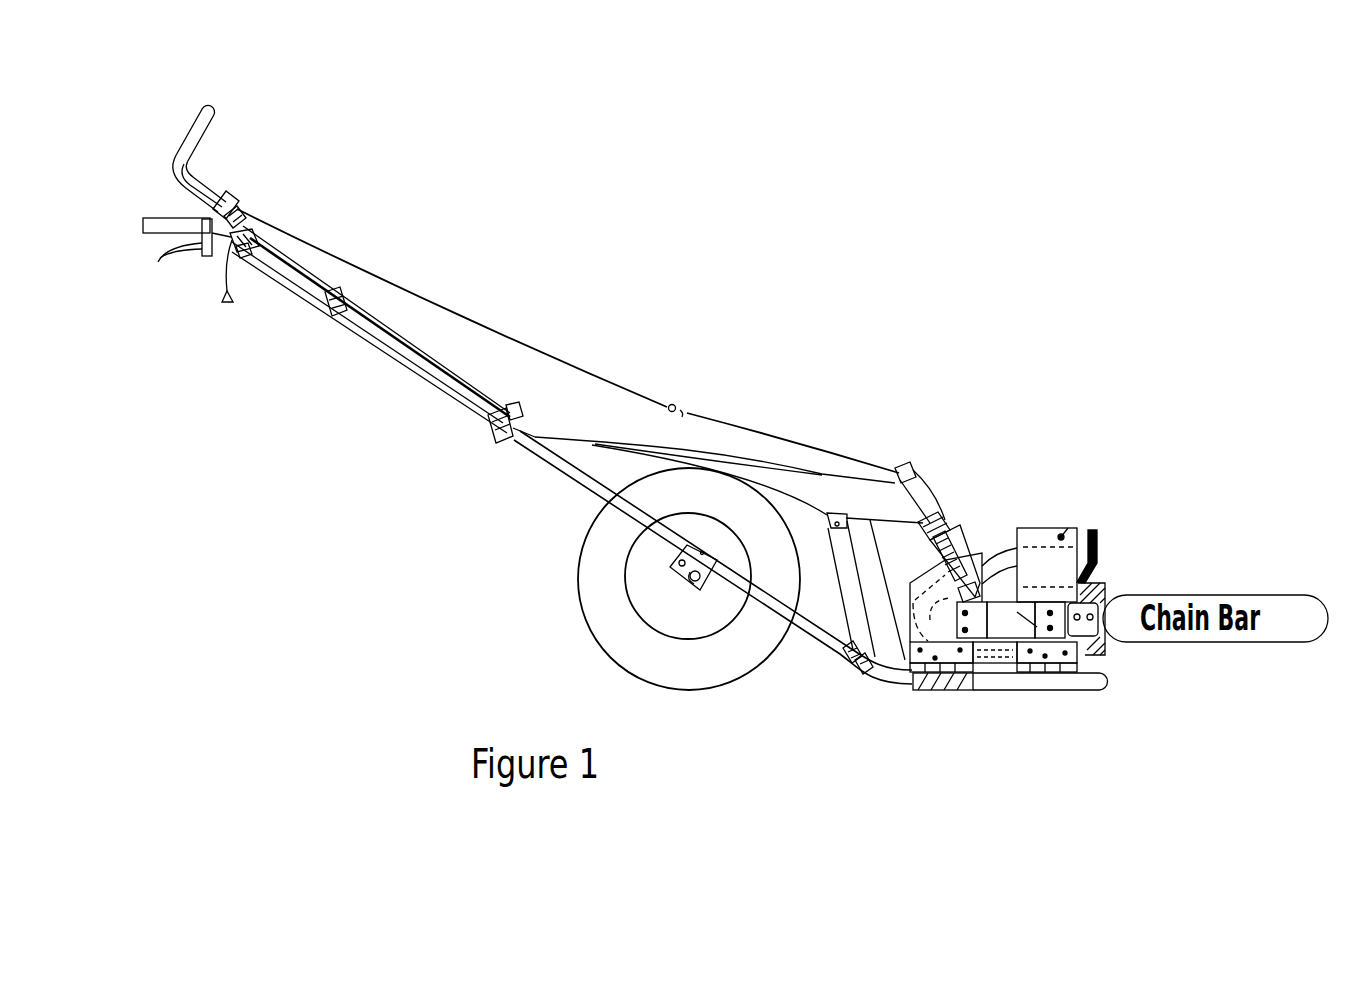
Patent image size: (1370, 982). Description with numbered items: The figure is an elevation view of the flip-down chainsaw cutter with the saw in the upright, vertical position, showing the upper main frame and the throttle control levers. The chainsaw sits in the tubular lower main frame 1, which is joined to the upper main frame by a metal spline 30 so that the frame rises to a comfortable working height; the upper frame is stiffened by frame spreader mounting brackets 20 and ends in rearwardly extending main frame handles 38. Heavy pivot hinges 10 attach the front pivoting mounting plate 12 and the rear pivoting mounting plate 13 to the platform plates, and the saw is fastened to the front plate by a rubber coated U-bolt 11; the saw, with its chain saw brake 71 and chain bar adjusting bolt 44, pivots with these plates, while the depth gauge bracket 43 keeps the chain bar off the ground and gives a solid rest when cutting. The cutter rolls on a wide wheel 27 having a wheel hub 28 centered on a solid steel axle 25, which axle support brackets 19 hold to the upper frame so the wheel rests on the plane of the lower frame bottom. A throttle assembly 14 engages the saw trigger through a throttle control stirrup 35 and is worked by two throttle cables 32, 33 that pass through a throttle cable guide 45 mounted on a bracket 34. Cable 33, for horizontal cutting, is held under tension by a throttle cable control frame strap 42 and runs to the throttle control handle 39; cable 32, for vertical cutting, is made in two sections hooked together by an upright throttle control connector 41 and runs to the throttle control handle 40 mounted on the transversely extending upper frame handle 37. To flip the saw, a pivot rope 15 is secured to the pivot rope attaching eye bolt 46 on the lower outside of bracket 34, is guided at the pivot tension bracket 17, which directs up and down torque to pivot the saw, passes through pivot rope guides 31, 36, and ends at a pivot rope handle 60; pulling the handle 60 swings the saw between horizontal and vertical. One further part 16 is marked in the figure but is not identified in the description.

The lower main frame 1 is at (1030, 683).
The pivot hinge 10 is at (913, 683).
The U-bolt 11 is at (1077, 530).
The front pivoting mounting plate 12 is at (1053, 530).
The rear pivoting mounting plate 13 is at (997, 553).
The throttle assembly 14 is at (960, 527).
The pivot rope 15 is at (912, 672).
The lower handle tube 16 is at (423, 366).
The pivot tension bracket 17 is at (848, 593).
The axle support bracket 19 is at (705, 585).
The frame spreader mounting bracket 20 is at (500, 430).
The axle 25 is at (697, 592).
The wheel 27 is at (610, 605).
The wheel hub 28 is at (670, 573).
The spline 30 is at (958, 672).
The pivot rope guide 31 is at (510, 404).
The throttle cable 32 is at (410, 285).
The throttle cable 33 is at (597, 445).
The bracket 34 is at (923, 510).
The throttle control stirrup 35 is at (995, 557).
The pivot rope guide 36 is at (245, 250).
The upper frame handle 37 is at (217, 123).
The main frame handle 38 is at (170, 229).
The throttle control handle 39 is at (228, 303).
The throttle control handle 40 is at (208, 176).
The upright throttle control connector 41 is at (695, 399).
The throttle cable control frame strap 42 is at (503, 432).
The depth gauge bracket 43 is at (1087, 655).
The chain bar adjusting bolt 44 is at (1097, 622).
The throttle cable guide 45 is at (909, 472).
The pivot rope attaching eye bolt 46 is at (930, 503).
The pivot rope handle 60 is at (241, 254).
The chain saw brake 71 is at (1098, 548).